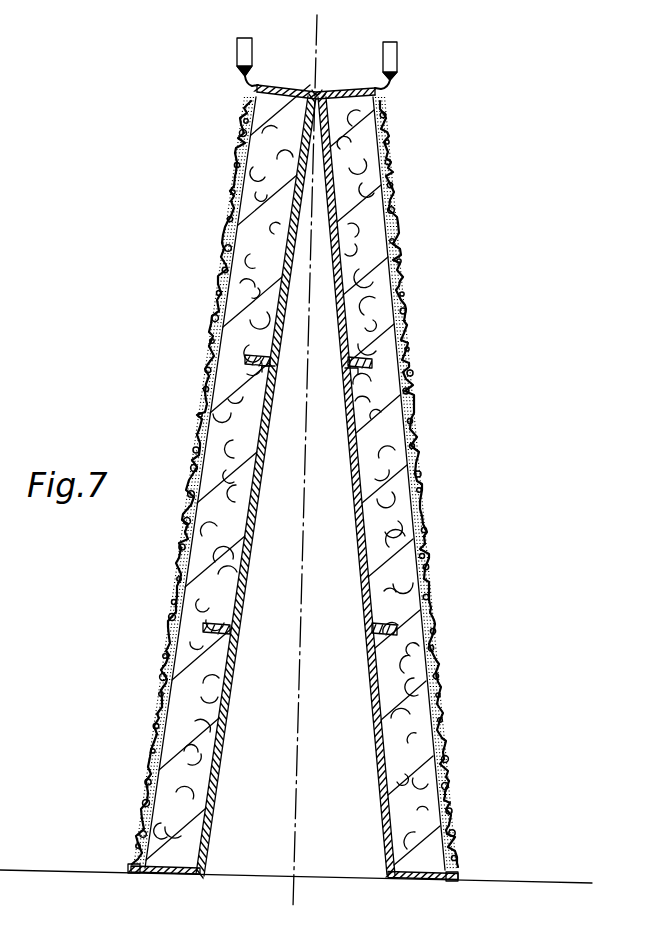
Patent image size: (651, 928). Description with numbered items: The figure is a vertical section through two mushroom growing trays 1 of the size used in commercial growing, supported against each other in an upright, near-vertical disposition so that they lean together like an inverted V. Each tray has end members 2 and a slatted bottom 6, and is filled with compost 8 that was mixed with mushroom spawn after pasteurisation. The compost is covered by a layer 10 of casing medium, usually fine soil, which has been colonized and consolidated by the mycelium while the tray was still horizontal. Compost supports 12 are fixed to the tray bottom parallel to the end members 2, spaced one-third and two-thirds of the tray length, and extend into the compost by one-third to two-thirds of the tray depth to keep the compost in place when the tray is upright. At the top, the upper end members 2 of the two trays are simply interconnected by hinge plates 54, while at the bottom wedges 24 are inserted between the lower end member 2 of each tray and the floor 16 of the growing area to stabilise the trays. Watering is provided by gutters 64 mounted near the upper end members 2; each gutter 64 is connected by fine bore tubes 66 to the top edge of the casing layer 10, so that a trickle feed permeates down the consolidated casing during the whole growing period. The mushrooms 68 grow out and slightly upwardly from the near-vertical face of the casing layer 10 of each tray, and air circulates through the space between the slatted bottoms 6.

The mushroom growing tray 1 is at (193, 370).
The end member 2 is at (283, 86).
The slatted bottom 6 is at (347, 441).
The compost 8 is at (385, 530).
The layer of casing medium 10 is at (406, 426).
The compost support 12 is at (346, 366).
The floor 16 is at (519, 884).
The wedge 24 is at (130, 866).
The hinge plate 54 is at (316, 92).
The gutter 64 is at (240, 52).
The fine bore tube 66 is at (254, 80).
The mushroom 68 is at (230, 215).